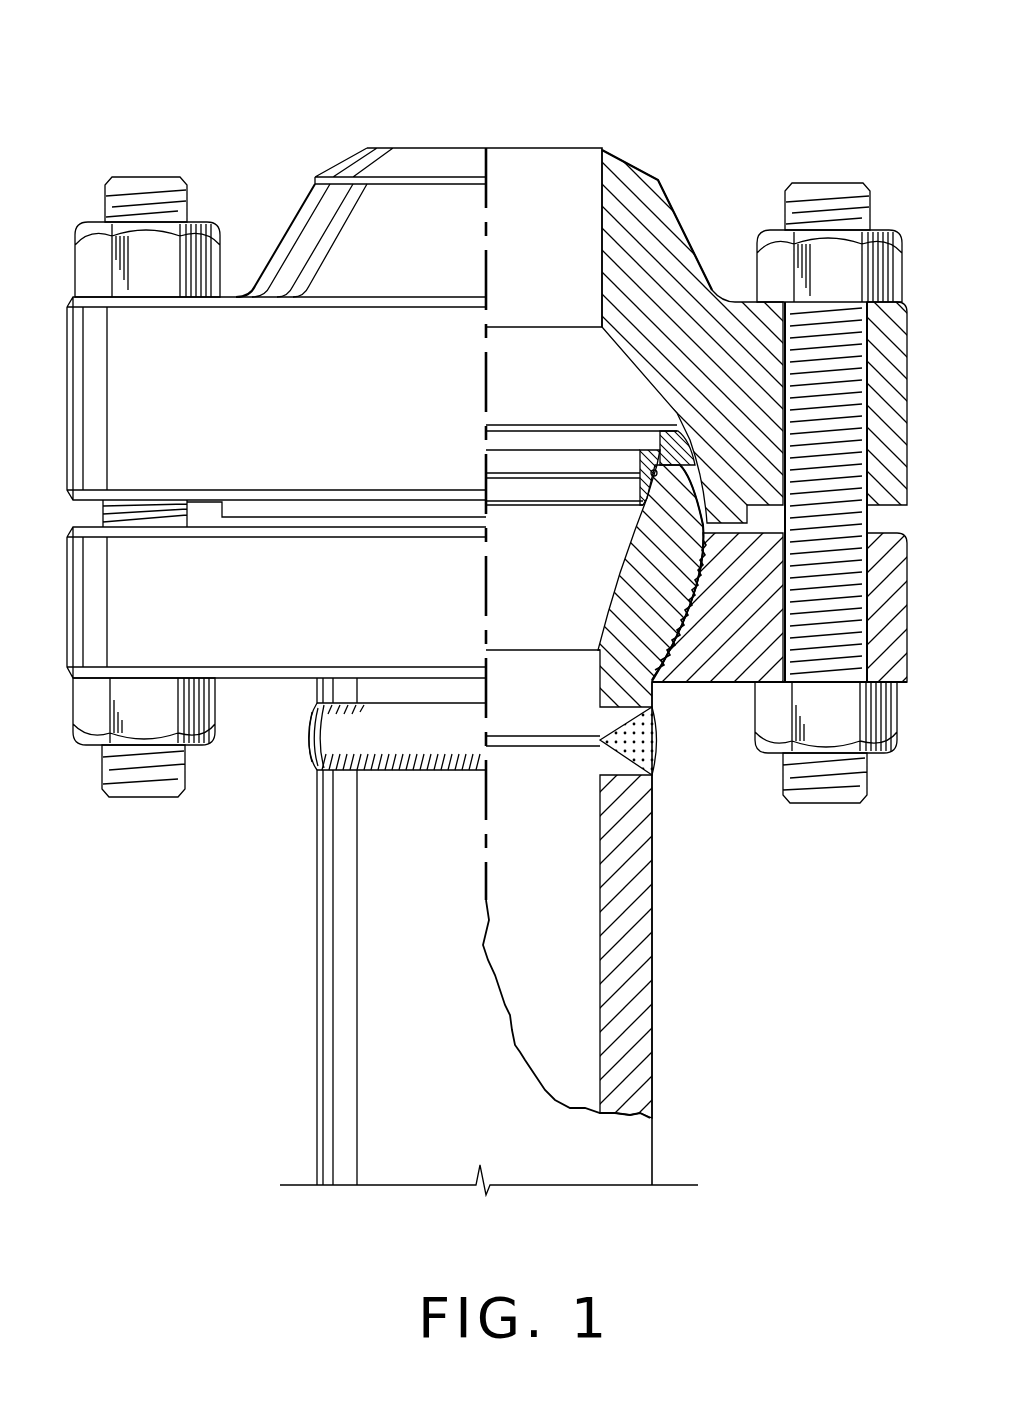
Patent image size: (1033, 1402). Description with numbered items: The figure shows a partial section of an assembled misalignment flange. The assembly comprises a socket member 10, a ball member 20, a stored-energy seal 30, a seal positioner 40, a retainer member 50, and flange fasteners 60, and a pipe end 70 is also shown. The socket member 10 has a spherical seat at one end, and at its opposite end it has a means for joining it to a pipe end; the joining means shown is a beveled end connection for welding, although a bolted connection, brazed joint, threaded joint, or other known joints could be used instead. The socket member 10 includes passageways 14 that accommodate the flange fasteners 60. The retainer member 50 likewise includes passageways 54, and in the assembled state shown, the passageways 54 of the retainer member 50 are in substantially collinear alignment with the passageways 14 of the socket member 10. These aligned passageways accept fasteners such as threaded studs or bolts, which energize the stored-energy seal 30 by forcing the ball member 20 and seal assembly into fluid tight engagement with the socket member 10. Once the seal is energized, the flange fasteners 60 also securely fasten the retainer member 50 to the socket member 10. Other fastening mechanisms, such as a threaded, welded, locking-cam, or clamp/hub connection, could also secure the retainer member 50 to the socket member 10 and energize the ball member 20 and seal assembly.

The socket member 10 is at (333, 156).
The passageways 14 is at (787, 352).
The ball member 20 is at (619, 565).
The stored-energy seal 30 is at (636, 426).
The seal positioner 40 is at (651, 473).
The retainer member 50 is at (267, 680).
The passageways 54 is at (800, 648).
The flange fasteners 60 is at (132, 200).
The pipe end 70 is at (317, 1025).